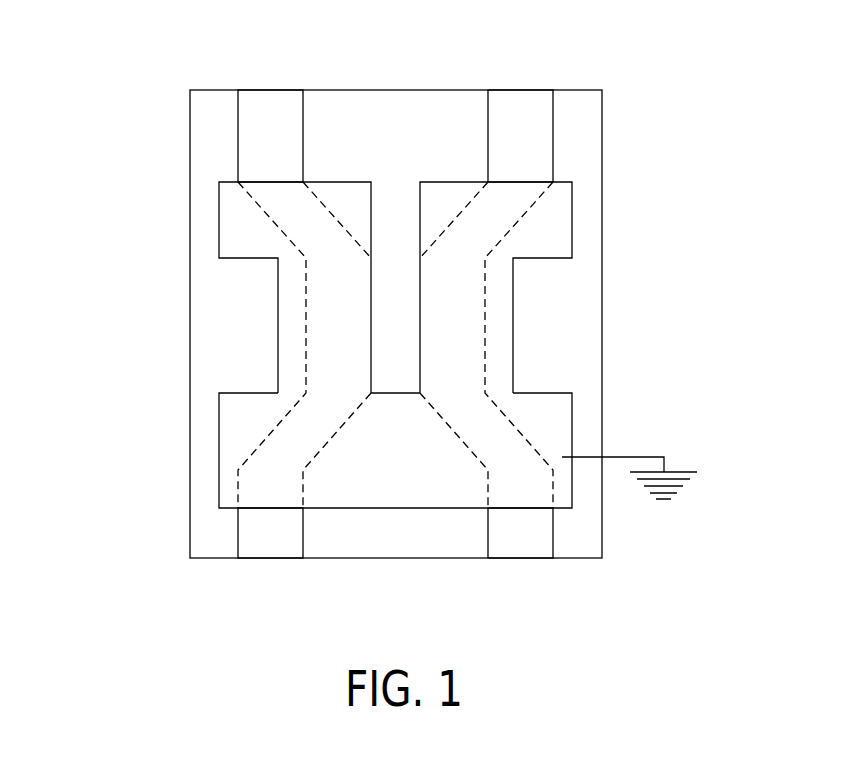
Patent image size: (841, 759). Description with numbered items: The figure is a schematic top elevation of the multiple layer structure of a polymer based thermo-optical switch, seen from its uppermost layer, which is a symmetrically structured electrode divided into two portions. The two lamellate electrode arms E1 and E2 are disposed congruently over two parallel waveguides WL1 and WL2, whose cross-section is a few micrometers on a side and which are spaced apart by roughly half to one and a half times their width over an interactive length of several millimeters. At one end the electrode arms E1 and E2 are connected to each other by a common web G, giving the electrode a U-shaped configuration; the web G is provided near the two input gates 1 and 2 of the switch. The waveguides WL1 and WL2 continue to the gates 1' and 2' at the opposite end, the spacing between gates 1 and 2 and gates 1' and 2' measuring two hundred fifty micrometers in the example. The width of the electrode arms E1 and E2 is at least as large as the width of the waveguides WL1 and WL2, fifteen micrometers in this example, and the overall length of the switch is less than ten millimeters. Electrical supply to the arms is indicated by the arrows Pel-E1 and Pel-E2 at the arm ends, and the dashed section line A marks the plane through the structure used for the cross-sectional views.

The gate 1' is at (270, 94).
The gate 2' is at (520, 96).
The input gate 1 is at (304, 413).
The input gate 2 is at (486, 413).
The waveguide WL1 is at (240, 522).
The waveguide WL2 is at (548, 530).
The electrode arm E1 is at (168, 283).
The electrode arm E2 is at (514, 265).
The web G is at (560, 421).
The piezoelectric element of electrode E1 Pel-E1 is at (205, 221).
The piezoelectric element of electrode E2 Pel-E2 is at (586, 220).
The section line A-A' A is at (677, 324).